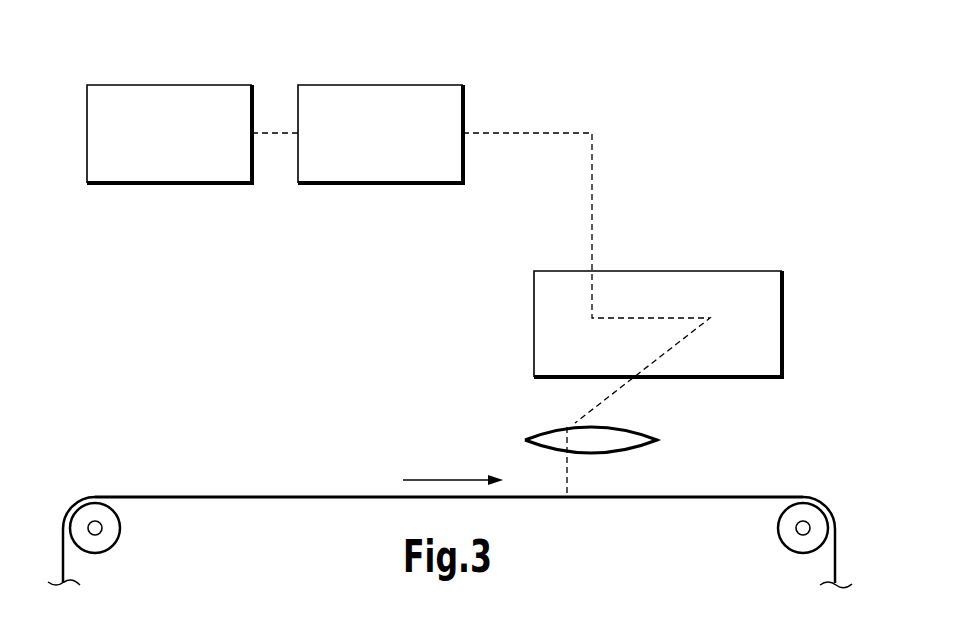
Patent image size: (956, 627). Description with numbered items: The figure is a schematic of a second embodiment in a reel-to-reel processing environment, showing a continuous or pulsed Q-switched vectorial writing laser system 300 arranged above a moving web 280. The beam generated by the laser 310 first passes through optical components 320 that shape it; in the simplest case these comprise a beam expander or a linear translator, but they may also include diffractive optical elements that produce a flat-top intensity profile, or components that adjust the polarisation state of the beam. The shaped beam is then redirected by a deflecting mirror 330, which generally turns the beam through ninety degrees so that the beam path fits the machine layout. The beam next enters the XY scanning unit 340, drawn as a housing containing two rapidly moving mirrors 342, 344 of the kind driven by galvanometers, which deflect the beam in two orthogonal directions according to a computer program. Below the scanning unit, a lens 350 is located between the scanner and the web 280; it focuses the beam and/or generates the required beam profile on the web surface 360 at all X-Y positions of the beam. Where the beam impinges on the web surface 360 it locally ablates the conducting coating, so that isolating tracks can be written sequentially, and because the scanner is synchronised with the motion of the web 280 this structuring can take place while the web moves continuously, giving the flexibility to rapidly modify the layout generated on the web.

The web 280 is at (232, 487).
The laser system 300 is at (718, 99).
The laser 310 is at (150, 142).
The optical components 320 is at (360, 142).
The deflecting mirror 330 is at (602, 126).
The XY scanning unit 340 is at (783, 318).
The first scanning mirror 342 is at (567, 312).
The second scanning mirror 344 is at (713, 298).
The lens 350 is at (659, 440).
The web surface 360 is at (354, 496).